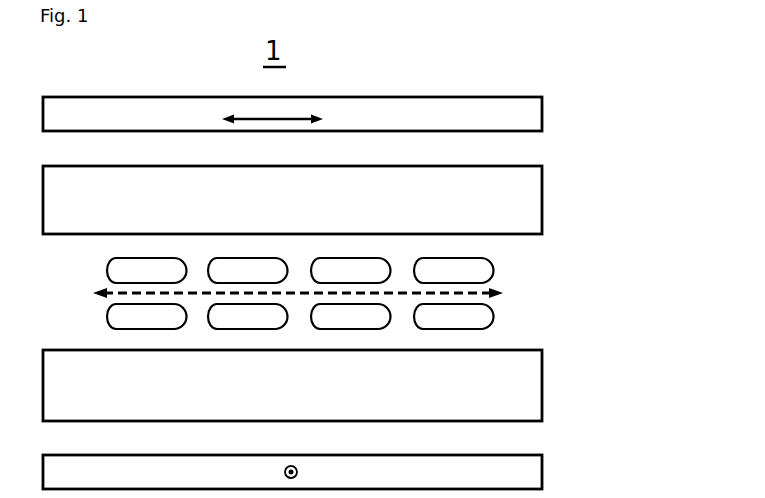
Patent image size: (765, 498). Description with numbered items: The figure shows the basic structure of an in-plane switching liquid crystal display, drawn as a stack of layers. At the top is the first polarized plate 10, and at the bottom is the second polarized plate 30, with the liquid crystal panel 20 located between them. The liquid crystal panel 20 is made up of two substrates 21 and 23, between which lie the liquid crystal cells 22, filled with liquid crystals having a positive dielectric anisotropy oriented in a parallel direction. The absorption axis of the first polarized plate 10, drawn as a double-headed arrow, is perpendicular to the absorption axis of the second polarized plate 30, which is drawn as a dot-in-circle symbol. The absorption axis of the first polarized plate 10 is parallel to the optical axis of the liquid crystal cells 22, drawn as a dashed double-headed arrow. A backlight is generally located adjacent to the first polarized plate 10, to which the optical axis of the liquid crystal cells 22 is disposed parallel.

The first polarized plate 10 is at (552, 110).
The liquid crystal panel 20 is at (380, 293).
The substrate 21 is at (567, 202).
The liquid crystal cells 22 is at (553, 293).
The substrate 23 is at (348, 385).
The second polarized plate 30 is at (578, 478).